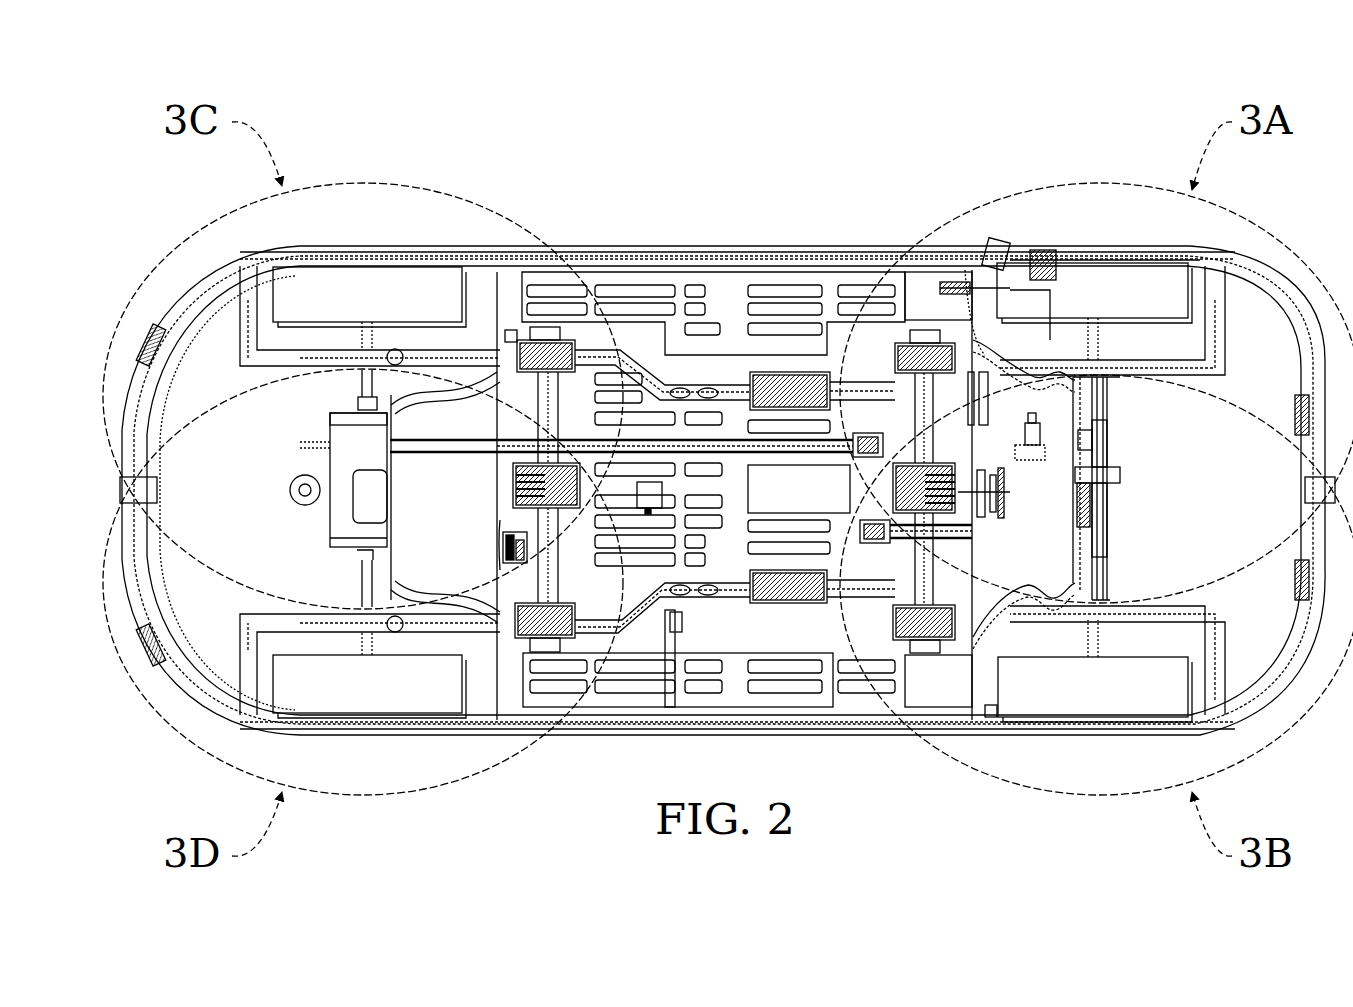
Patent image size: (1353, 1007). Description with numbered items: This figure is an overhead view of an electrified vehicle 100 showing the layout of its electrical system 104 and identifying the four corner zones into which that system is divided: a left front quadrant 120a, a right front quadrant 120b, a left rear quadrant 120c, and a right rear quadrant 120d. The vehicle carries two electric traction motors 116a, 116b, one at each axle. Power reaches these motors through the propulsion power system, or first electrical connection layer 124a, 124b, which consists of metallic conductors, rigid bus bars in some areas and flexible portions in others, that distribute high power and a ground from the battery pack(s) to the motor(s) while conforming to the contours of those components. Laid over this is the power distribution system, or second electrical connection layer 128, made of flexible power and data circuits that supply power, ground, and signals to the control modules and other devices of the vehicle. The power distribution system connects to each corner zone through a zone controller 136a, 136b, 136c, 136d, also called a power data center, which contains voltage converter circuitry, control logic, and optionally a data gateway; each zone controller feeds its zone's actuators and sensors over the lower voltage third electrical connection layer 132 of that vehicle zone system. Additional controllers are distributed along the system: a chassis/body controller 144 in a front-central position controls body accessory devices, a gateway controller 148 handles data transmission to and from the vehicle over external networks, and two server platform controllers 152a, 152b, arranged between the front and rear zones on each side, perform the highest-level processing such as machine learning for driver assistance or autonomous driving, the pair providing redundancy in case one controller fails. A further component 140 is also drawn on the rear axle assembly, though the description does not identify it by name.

The electrified vehicle 100 is at (1163, 50).
The electrical system 104 is at (592, 160).
The electric traction motor 116a is at (1093, 510).
The electric traction motor 116b is at (337, 520).
The left front quadrant 120a is at (1107, 183).
The right front quadrant 120b is at (1094, 797).
The left rear quadrant 120c is at (366, 184).
The right rear quadrant 120d is at (370, 796).
The first electrical connection layer 124a is at (958, 537).
The first electrical connection layer 124b is at (520, 446).
The second electrical connection layer 128 is at (698, 384).
The third electrical connection layer 132 is at (515, 330).
The zone controller 136a is at (950, 368).
The zone controller 136b is at (952, 631).
The zone controller 136c is at (522, 372).
The zone controller 136d is at (522, 612).
The motor 140 is at (950, 505).
The chassis/body controller 144 is at (522, 490).
The gateway controller 148 is at (512, 548).
The server platform controller 152a is at (798, 380).
The server platform controller 152b is at (815, 602).